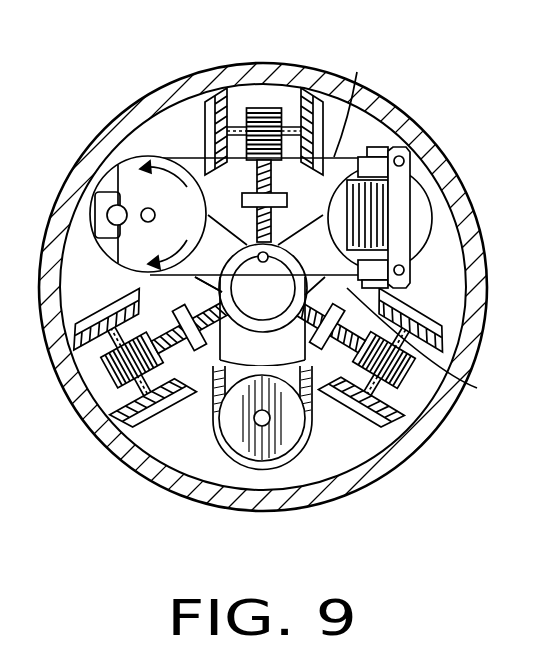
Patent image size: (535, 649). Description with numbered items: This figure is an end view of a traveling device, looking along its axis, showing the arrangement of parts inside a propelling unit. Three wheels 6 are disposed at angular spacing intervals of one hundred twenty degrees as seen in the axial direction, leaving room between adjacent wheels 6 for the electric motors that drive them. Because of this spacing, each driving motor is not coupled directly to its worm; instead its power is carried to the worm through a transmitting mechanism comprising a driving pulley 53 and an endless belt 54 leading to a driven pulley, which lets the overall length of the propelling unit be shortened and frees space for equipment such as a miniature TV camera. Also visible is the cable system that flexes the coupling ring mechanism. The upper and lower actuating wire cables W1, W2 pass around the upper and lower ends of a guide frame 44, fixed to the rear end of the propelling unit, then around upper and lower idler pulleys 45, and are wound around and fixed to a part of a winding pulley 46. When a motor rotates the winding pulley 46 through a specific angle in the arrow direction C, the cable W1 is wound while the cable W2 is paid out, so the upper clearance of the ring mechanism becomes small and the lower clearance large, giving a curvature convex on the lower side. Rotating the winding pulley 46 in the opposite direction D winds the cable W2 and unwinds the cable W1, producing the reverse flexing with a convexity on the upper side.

The wheels 6 is at (290, 101).
The guide frame 44 is at (407, 172).
The idler pulleys 45 is at (366, 145).
The winding pulley 46 is at (112, 178).
The driving pulley 53 is at (233, 425).
The endless belt 54 is at (310, 393).
The arrow direction C is at (183, 176).
The opposite direction D is at (196, 279).
The actuating wire cable W1 is at (360, 99).
The actuating wire cable W2 is at (437, 346).